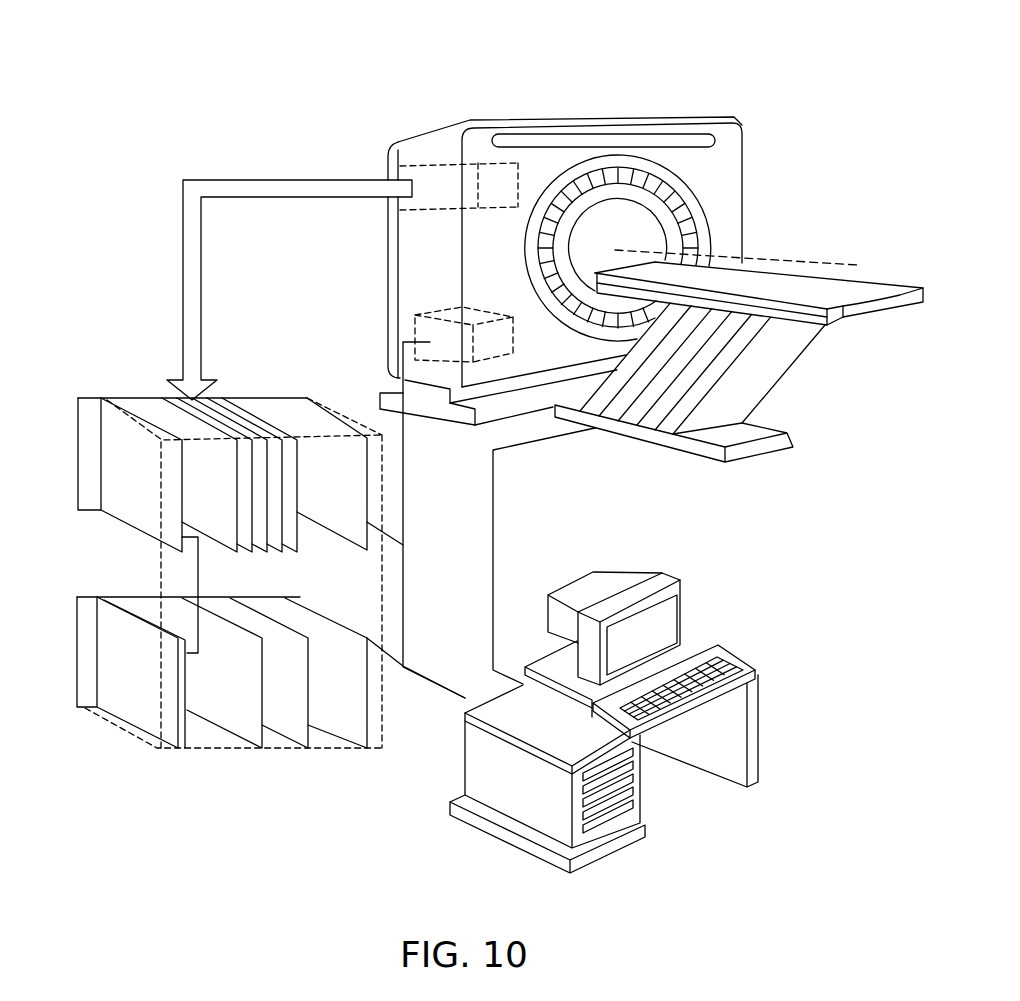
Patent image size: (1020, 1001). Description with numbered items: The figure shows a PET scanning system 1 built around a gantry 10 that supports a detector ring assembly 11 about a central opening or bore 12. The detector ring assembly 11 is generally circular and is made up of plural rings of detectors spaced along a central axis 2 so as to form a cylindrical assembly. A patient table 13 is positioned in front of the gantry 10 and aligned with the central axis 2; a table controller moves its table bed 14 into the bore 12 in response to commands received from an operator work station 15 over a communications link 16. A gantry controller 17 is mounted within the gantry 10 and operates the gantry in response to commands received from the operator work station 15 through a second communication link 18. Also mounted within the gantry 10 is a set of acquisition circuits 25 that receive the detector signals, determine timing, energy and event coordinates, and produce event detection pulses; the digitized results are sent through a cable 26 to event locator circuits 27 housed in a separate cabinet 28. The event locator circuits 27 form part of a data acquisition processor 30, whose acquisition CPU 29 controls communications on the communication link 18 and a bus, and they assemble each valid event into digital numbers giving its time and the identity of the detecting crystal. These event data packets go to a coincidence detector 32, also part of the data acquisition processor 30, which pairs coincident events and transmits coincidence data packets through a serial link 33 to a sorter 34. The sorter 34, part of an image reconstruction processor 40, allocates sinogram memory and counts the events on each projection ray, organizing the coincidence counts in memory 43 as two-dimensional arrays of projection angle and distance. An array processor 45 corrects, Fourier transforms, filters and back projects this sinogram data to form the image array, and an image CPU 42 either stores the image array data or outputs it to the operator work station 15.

The PET scanning system 1 is at (789, 59).
The central axis 2 is at (823, 260).
The gantry 10 is at (749, 166).
The detector ring assembly 11 is at (686, 222).
The bore 12 is at (637, 242).
The patient table 13 is at (795, 361).
The table bed 14 is at (888, 293).
The operator work station 15 is at (688, 572).
The communications link 16 is at (497, 518).
The gantry controller 17 is at (420, 314).
The second communication link 18 is at (405, 556).
The acquisition circuits 25 is at (420, 165).
The cable 26 is at (203, 304).
The event locator circuits 27 is at (193, 500).
The cabinet 28 is at (215, 750).
The acquisition CPU 29 is at (319, 501).
The data acquisition processor 30 is at (119, 396).
The coincidence detector 32 is at (118, 485).
The serial link 33 is at (200, 584).
The sorter 34 is at (118, 681).
The image reconstruction processor 40 is at (104, 587).
The image CPU 42 is at (324, 693).
The memory 43 is at (206, 688).
The array processor 45 is at (271, 693).